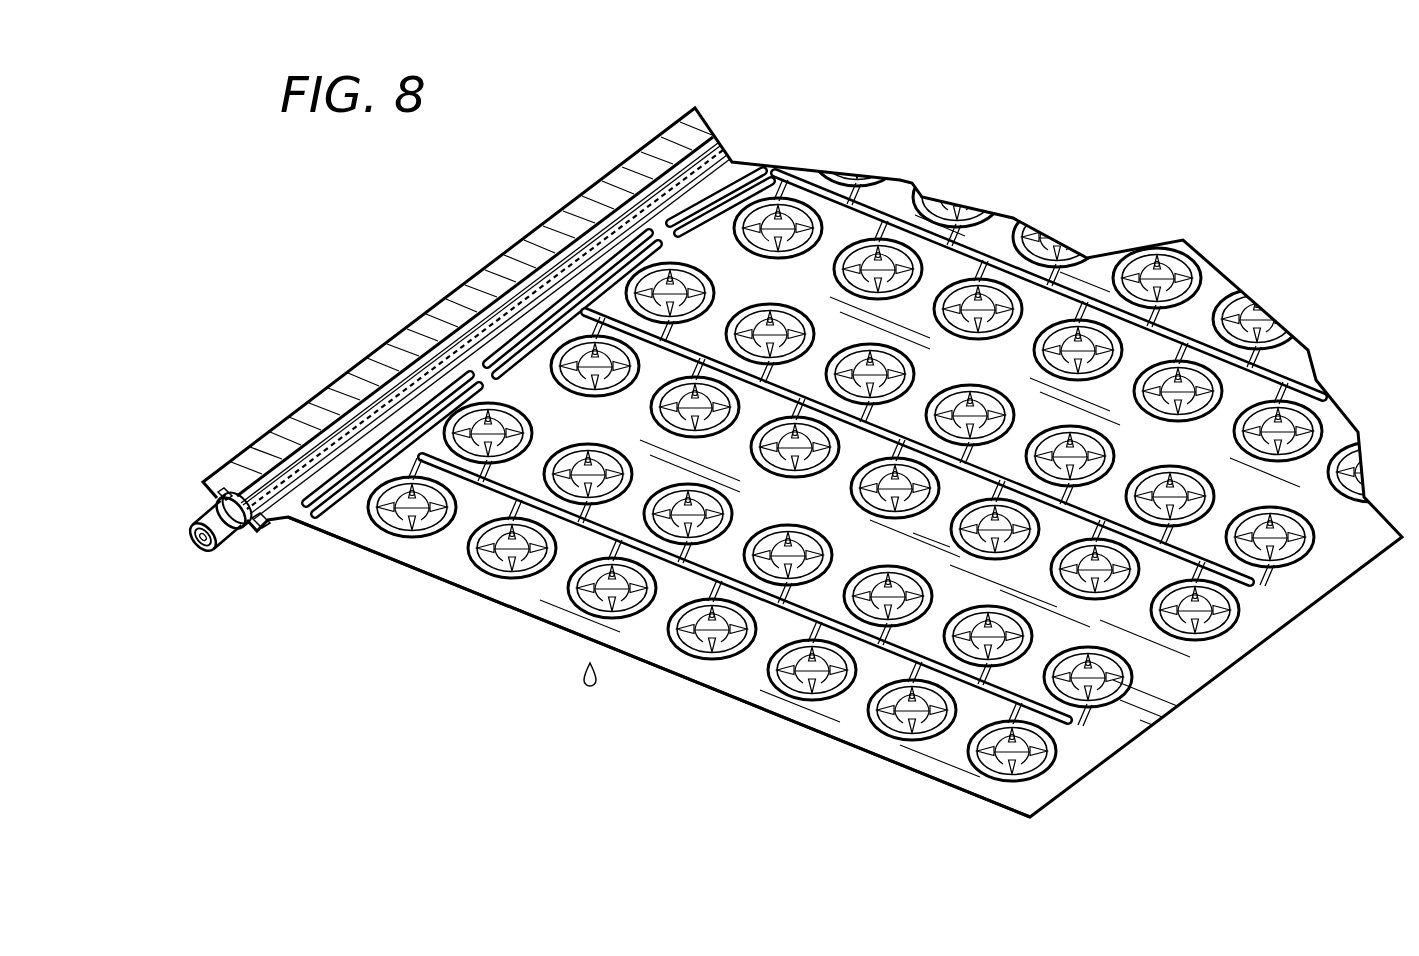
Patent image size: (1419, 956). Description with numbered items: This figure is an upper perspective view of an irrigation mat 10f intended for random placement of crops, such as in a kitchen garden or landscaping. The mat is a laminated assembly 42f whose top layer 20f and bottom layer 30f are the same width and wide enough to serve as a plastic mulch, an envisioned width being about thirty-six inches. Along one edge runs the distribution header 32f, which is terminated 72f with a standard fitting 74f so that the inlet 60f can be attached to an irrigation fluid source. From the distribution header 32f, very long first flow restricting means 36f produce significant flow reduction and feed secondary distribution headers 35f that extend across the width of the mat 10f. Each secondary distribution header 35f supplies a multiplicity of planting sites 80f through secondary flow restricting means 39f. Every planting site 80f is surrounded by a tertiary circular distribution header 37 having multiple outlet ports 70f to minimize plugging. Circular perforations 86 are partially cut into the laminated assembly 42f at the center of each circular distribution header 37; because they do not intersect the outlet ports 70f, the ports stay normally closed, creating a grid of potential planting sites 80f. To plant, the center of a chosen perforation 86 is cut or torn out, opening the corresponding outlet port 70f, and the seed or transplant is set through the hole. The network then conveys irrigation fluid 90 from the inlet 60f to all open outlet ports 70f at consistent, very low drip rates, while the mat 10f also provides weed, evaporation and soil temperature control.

The mat 10f is at (412, 293).
The top layer 20f is at (898, 184).
The bottom layer 30f is at (470, 593).
The distribution header 32f is at (718, 143).
The secondary distribution headers 35f is at (1188, 337).
The first flow restricting means 36f is at (600, 258).
The tertiary circular distribution header 37 is at (710, 658).
The secondary flow restricting means 39f is at (1253, 575).
The laminated assembly 42f is at (1102, 262).
The inlet 60f is at (178, 558).
The outlet ports 70f is at (808, 698).
The termination 72f is at (262, 525).
The standard fitting 74f is at (190, 508).
The planting sites 80f is at (582, 617).
The circular perforations 86 is at (885, 727).
The irrigation fluid 90 is at (582, 684).